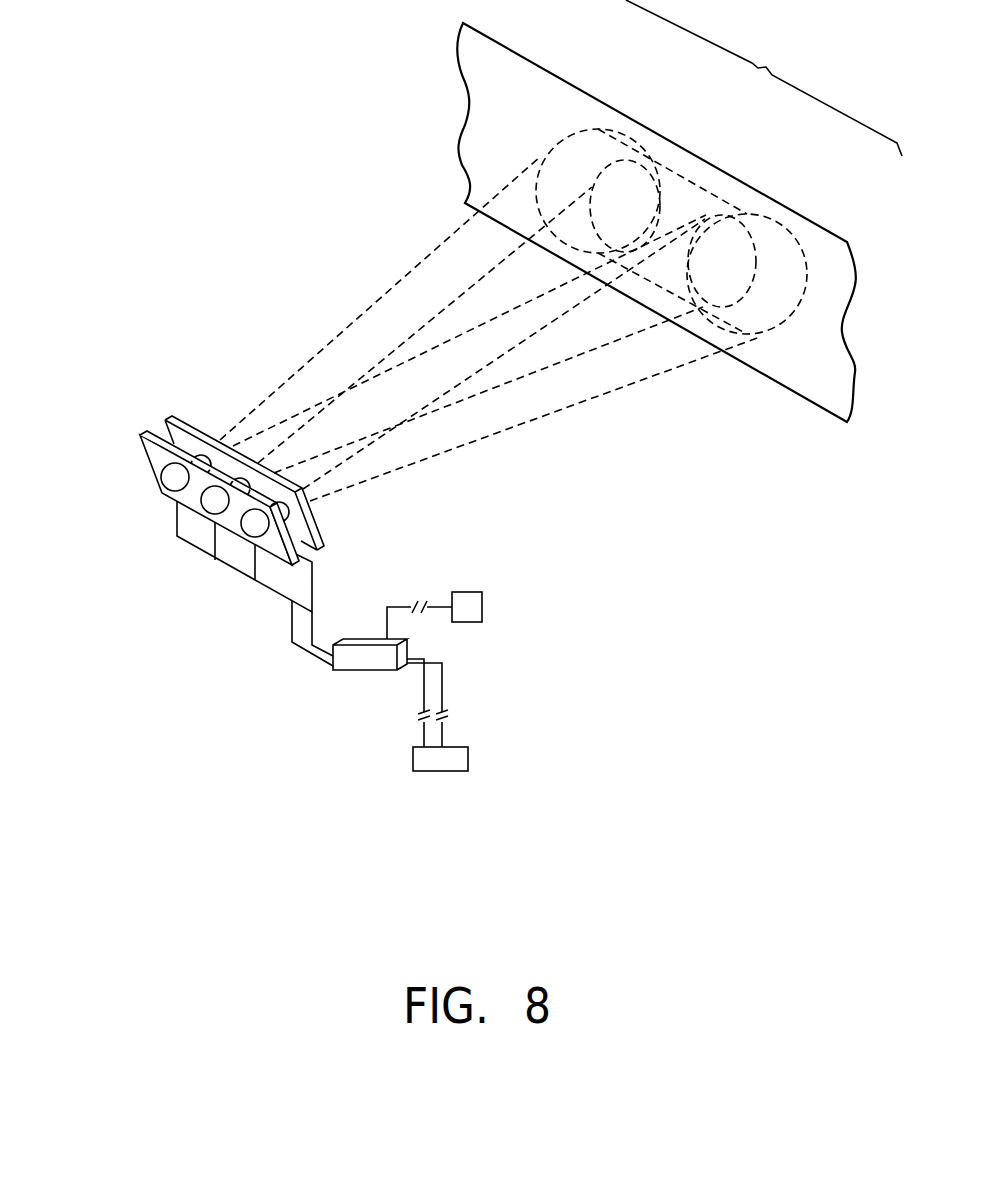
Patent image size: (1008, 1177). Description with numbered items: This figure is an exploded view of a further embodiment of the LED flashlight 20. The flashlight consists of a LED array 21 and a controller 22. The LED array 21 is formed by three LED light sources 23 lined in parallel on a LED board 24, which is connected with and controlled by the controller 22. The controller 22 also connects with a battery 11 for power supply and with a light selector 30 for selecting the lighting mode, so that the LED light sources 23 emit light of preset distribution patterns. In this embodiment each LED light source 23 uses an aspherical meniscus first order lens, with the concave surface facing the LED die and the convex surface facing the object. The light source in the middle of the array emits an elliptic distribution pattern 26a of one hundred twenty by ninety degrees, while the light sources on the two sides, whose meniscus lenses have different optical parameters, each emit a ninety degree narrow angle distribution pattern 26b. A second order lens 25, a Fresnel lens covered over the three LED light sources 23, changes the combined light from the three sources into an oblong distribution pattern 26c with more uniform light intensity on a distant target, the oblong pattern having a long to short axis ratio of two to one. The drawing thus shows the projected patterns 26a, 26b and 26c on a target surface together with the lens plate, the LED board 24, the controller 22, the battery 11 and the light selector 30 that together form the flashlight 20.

The battery 11 is at (457, 762).
The LED flashlight 20 is at (167, 555).
The LED array 21 is at (186, 466).
The controller 22 is at (360, 663).
The LED light source 23 is at (170, 417).
The LED board 24 is at (163, 491).
The second order lens 25 is at (205, 430).
The elliptic distribution pattern 26a is at (698, 182).
The narrow angle distribution pattern 26b is at (593, 128).
The oblong distribution pattern 26c is at (679, 211).
The light selector 30 is at (476, 603).